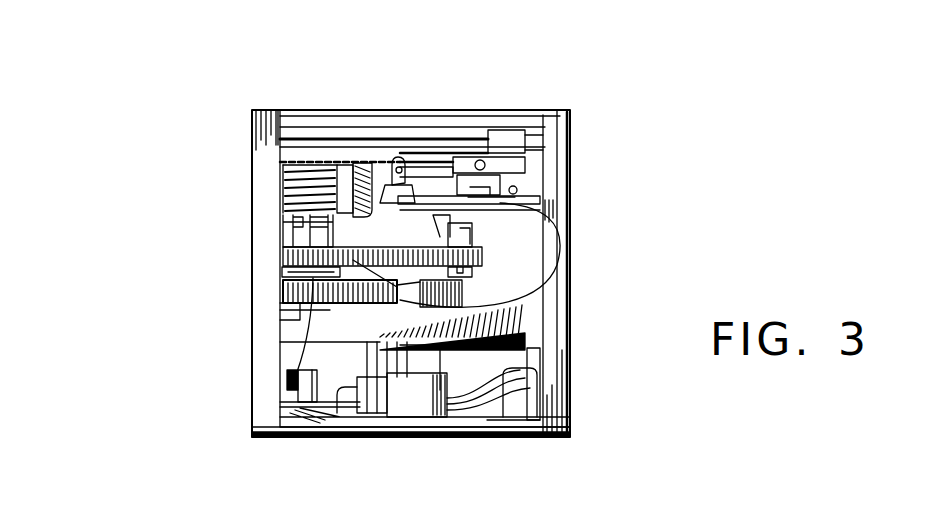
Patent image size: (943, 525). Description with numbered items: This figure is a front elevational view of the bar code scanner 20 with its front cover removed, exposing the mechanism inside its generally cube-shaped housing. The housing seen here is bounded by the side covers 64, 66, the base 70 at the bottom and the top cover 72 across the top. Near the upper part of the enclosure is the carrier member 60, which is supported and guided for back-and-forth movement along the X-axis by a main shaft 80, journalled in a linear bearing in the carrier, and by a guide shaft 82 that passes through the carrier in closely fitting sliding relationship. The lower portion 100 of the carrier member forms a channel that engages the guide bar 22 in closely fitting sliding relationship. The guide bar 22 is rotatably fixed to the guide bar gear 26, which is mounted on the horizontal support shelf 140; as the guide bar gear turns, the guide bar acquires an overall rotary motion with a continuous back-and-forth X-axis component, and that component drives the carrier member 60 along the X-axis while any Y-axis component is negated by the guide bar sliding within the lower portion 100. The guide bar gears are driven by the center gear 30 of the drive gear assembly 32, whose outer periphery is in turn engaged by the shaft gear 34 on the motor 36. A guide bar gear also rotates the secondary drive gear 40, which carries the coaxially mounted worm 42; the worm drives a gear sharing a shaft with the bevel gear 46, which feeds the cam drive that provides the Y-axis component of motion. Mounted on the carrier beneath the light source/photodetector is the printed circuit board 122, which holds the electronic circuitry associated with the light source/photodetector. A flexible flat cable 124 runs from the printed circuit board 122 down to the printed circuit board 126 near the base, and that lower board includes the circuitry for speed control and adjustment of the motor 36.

The bar code scanner 20 is at (118, 340).
The guide bar 22 is at (462, 232).
The guide bar gear 26 is at (482, 263).
The center gear 30 is at (282, 282).
The drive gear assembly 32 is at (282, 292).
The shaft gear 34 is at (500, 272).
The motor 36 is at (463, 380).
The secondary drive gear 40 is at (282, 254).
The worm 42 is at (290, 203).
The bevel gear 46 is at (368, 160).
The carrier member 60 is at (502, 137).
The side cover 64 is at (265, 390).
The side cover 66 is at (553, 370).
The base 70 is at (290, 430).
The top cover 72 is at (453, 110).
The main shaft 80 is at (288, 150).
The guide shaft 82 is at (320, 140).
The lower portion of carrier member 100 is at (440, 237).
The printed circuit board 122 is at (490, 200).
The flexible flat cable 124 is at (313, 278).
The printed circuit board 126 is at (325, 405).
The horizontal support shelf 140 is at (520, 318).